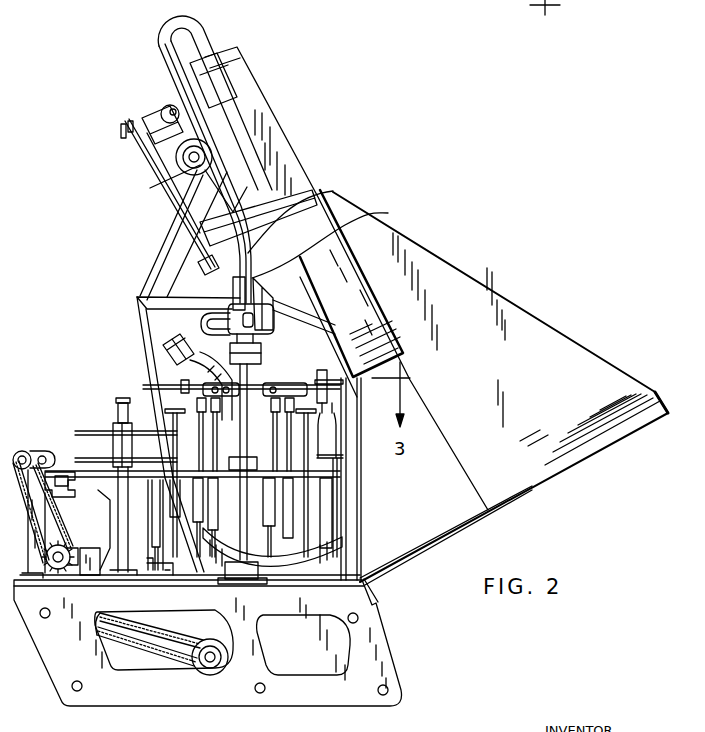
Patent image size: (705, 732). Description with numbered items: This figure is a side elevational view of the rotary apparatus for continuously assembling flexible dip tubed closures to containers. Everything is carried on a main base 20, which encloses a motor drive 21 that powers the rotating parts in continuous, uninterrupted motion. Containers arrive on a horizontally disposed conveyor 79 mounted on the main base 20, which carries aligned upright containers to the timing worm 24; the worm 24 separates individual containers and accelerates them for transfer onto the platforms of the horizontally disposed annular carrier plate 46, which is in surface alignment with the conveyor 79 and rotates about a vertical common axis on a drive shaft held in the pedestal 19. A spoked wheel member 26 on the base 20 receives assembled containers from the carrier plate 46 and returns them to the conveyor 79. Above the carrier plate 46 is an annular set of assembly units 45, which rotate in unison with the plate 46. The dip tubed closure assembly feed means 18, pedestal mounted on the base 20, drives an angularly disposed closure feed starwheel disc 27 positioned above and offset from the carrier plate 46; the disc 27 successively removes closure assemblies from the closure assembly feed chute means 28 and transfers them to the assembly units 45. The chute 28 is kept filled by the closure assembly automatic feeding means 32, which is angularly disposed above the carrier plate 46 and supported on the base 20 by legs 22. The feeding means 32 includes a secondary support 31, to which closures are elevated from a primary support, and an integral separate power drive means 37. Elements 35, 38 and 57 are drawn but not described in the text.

The dip tubed closure assembly feed means 18 is at (248, 376).
The pedestal 19 is at (257, 522).
The main base 20 is at (377, 620).
The motor drive 21 is at (198, 664).
The legs 22 is at (145, 325).
The timing worm 24 is at (48, 445).
The spoked wheel member 26 is at (93, 432).
The closure feed starwheel disc 27 is at (233, 305).
The closure assembly feed chute means 28 is at (325, 192).
The secondary support 31 is at (350, 290).
The closure assembly automatic feeding means 32 is at (539, 329).
The guide plate 35 is at (334, 240).
The power drive means 37 is at (180, 170).
The bracket 38 is at (134, 119).
The assembly units 45 is at (160, 360).
The carrier plate 46 is at (340, 480).
The upper rod 57 is at (178, 424).
The conveyor 79 is at (66, 470).